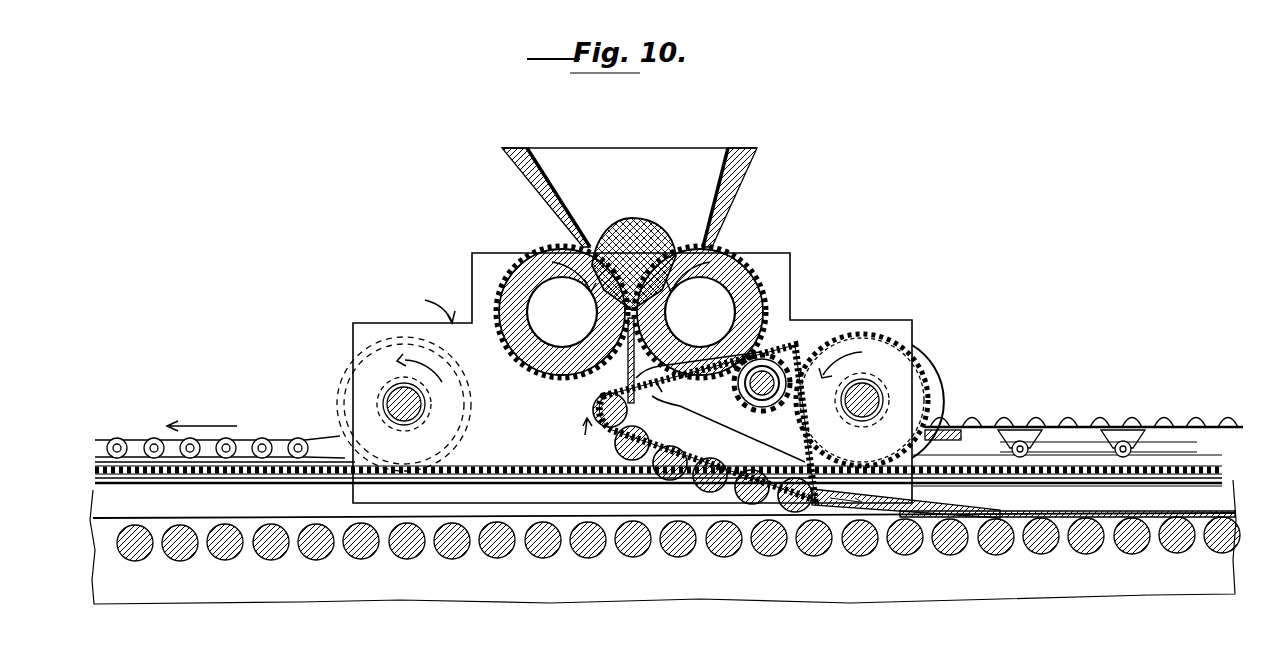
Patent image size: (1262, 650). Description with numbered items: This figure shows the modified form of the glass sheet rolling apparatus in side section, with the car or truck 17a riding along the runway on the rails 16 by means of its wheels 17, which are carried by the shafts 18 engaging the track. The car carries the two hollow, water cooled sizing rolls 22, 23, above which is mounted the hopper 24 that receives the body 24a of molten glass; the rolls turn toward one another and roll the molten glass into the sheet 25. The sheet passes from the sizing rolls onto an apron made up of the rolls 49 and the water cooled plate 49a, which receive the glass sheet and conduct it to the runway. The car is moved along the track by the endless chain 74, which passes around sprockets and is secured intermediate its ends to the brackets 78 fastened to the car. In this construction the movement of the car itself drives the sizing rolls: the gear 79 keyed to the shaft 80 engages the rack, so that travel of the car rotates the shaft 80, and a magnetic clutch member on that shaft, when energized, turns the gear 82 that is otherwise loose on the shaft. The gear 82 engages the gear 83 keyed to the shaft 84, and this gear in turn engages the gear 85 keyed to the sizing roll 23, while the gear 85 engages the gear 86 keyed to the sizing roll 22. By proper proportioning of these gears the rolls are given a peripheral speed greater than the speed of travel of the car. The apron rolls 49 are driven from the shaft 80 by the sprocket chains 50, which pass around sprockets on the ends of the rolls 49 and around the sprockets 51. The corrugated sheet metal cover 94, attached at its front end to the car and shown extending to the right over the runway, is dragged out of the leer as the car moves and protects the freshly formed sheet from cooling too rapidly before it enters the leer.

The rails 16 is at (970, 460).
The wheels 17 is at (340, 372).
The car or truck 17a is at (422, 300).
The shafts 18 is at (1062, 466).
The sizing roll 22 is at (544, 290).
The sizing roll 23 is at (710, 288).
The hopper 24 is at (540, 165).
The body of molten glass 24a is at (635, 225).
The sheet 25 is at (1010, 511).
The apron rolls 49 is at (640, 460).
The water cooled plate 49a is at (836, 518).
The sprocket chains 50 is at (592, 402).
The sprockets 51 is at (740, 386).
The endless chain 74 is at (140, 446).
The brackets 78 is at (330, 440).
The gear 79 is at (928, 400).
The shaft 80 is at (870, 392).
The gear 82 is at (880, 336).
The gear 83 is at (790, 340).
The shaft 84 is at (770, 378).
The gear 85 is at (720, 250).
The gear 86 is at (545, 250).
The cover 94 is at (1173, 415).